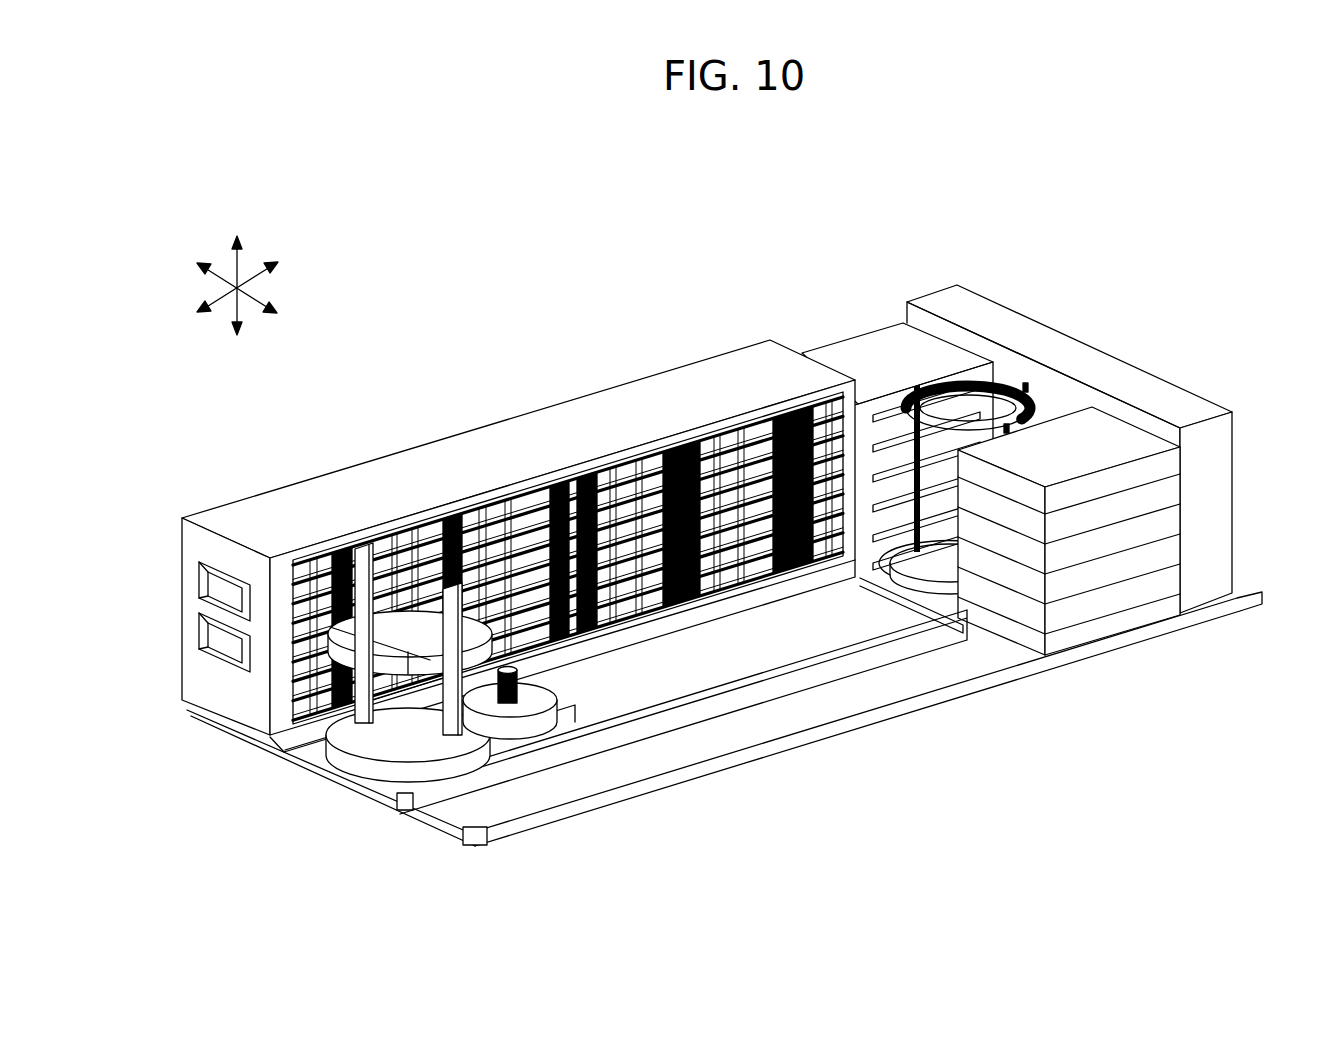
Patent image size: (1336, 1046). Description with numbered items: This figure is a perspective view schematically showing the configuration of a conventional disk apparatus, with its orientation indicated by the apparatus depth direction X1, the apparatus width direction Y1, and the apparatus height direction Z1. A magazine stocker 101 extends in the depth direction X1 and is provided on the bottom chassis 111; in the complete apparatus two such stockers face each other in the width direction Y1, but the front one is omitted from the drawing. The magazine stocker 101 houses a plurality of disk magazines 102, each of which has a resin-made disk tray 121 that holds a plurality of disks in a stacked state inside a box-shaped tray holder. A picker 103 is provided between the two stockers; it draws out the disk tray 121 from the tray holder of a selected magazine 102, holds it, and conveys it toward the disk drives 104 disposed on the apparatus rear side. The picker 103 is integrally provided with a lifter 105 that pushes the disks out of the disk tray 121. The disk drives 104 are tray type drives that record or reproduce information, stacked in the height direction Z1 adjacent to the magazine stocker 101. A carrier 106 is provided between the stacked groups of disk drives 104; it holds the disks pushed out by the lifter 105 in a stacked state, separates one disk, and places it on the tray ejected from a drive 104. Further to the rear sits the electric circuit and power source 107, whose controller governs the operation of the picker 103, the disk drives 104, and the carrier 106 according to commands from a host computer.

The magazine stocker 101 is at (288, 500).
The disk magazine 102 is at (695, 600).
The picker 103 is at (343, 765).
The disk drive 104 is at (880, 343).
The lifter 105 is at (563, 698).
The carrier 106 is at (1005, 388).
The electric circuit and power source 107 is at (1112, 367).
The bottom chassis 111 is at (665, 692).
The disk tray 121 is at (718, 592).
The apparatus height direction Z1 is at (232, 268).
The apparatus depth direction X1 is at (250, 277).
The apparatus width direction Y1 is at (253, 291).